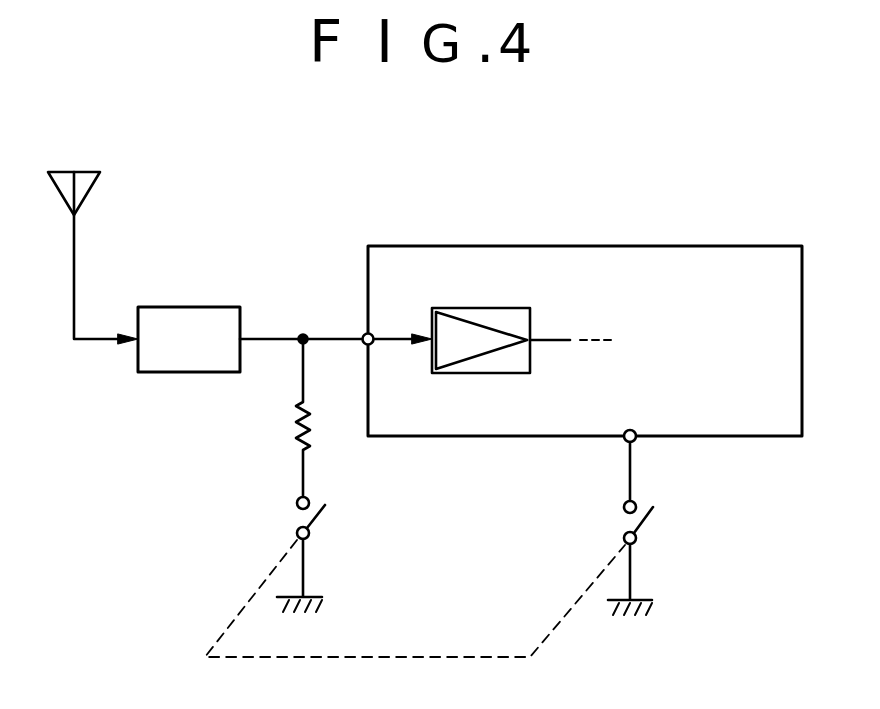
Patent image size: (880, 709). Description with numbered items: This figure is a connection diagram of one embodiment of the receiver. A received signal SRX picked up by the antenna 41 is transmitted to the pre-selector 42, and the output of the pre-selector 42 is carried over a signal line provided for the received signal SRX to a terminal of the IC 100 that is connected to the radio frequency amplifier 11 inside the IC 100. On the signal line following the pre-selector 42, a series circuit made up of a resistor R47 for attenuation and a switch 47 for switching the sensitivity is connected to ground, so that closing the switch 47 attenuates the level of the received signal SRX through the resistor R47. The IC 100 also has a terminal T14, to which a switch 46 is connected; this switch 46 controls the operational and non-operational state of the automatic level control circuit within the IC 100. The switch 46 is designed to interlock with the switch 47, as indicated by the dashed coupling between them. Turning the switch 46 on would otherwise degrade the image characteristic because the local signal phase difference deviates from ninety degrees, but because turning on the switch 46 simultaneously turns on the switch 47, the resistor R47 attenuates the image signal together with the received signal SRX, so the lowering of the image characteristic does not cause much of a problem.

The antenna 41 is at (73, 282).
The pre-selector 42 is at (185, 372).
The received signal SRX is at (277, 338).
The IC 100 is at (453, 437).
The radio frequency amplifier 11 is at (490, 373).
The resistor for attenuation R47 is at (313, 428).
The switch for switching the sensitivity 47 is at (313, 519).
The terminal T14 is at (634, 444).
The switch 46 is at (643, 516).